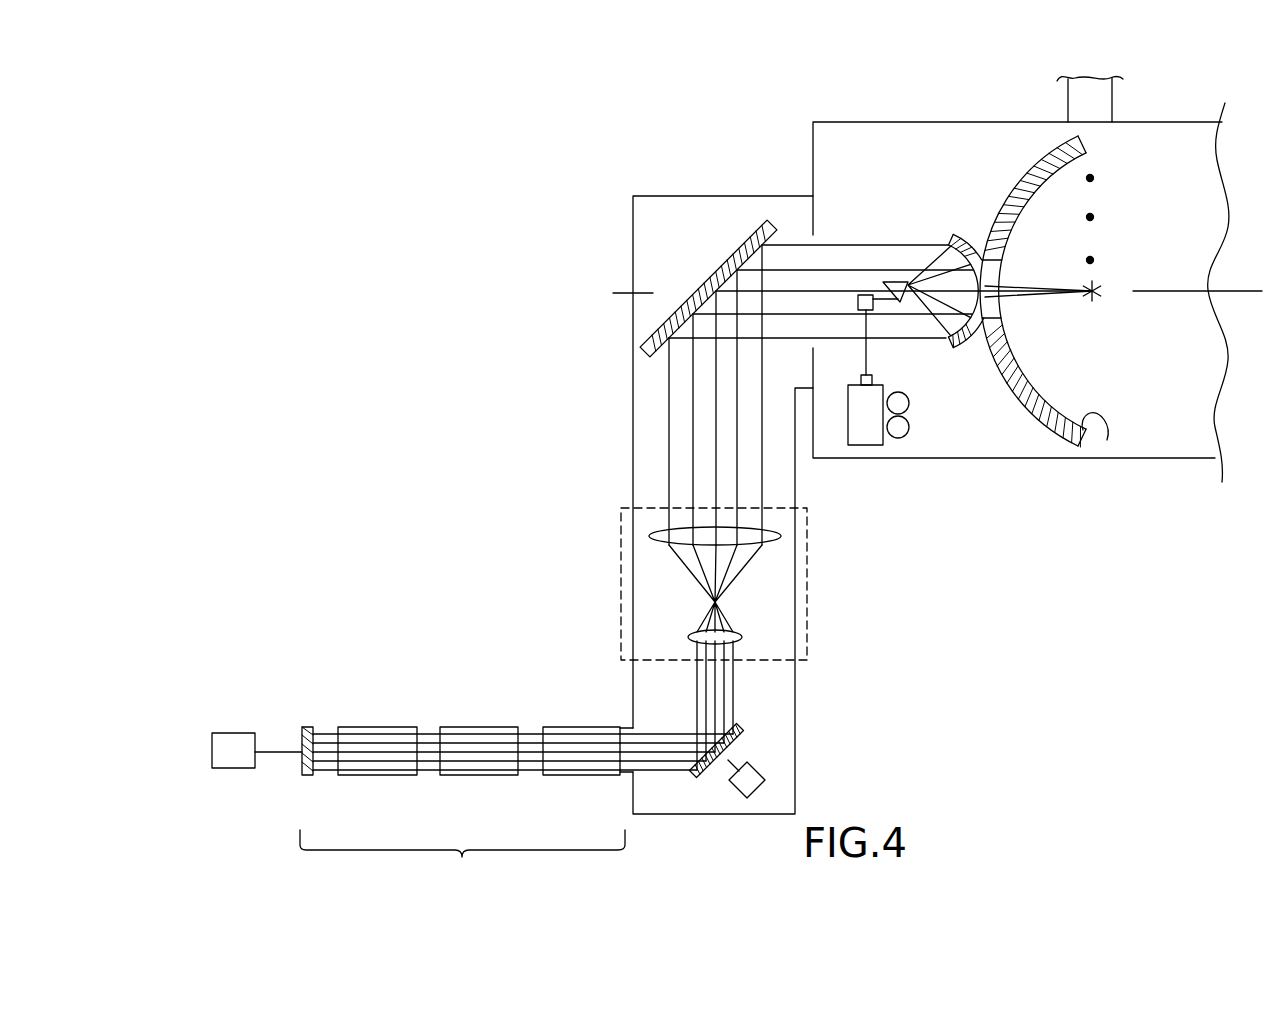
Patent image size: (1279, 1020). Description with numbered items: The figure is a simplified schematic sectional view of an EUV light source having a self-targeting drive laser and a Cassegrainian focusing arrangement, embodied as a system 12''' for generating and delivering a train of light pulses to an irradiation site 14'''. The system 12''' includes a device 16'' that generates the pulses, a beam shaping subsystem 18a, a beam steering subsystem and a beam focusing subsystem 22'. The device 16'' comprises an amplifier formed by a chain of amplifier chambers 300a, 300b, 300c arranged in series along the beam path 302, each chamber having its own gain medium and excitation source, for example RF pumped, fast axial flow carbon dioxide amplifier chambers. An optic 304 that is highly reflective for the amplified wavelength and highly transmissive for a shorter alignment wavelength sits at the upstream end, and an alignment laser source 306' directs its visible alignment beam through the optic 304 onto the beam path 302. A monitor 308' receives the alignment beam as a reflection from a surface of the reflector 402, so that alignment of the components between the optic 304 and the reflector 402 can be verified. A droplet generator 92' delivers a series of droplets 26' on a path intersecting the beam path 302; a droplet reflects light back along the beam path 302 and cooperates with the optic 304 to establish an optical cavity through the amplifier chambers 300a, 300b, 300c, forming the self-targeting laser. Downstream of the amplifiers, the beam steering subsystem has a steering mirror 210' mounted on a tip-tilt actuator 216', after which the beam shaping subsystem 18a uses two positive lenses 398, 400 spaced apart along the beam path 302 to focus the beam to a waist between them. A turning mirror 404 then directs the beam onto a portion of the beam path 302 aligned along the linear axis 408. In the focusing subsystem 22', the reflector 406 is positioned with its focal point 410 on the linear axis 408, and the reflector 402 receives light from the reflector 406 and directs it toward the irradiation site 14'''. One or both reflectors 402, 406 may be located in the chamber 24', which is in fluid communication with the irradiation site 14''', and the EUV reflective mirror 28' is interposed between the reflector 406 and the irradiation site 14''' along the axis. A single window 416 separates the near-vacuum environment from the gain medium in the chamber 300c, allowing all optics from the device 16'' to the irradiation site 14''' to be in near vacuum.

The system for generating and delivering a train of light pulses 12''' is at (618, 505).
The irradiation site 14''' is at (1134, 327).
The device generating pulses 16'' is at (462, 866).
The beam shaping subsystem 18a is at (621, 588).
The beam focusing subsystem 22' is at (1021, 285).
The chamber 24' is at (1071, 291).
The droplets 26' is at (1141, 219).
The EUV reflective mirror 28' is at (1100, 468).
The droplet generator 92' is at (1047, 97).
The steering mirror 210' is at (777, 733).
The tip-tilt actuator 216' is at (795, 775).
The amplifier chamber 300a is at (378, 775).
The amplifier chamber 300b is at (478, 775).
The amplifier chamber 300c is at (580, 775).
The beam path 302 is at (530, 732).
The optic 304 is at (307, 727).
The alignment laser source 306' is at (253, 708).
The monitor 308' is at (898, 449).
The positive lens 398 is at (678, 536).
The positive lens 400 is at (692, 638).
The reflector 402 is at (886, 282).
The turning mirror 404 is at (702, 283).
The reflector 406 is at (966, 236).
The linear axis 408 is at (613, 294).
The focal point 410 is at (747, 292).
The window 416 is at (633, 760).